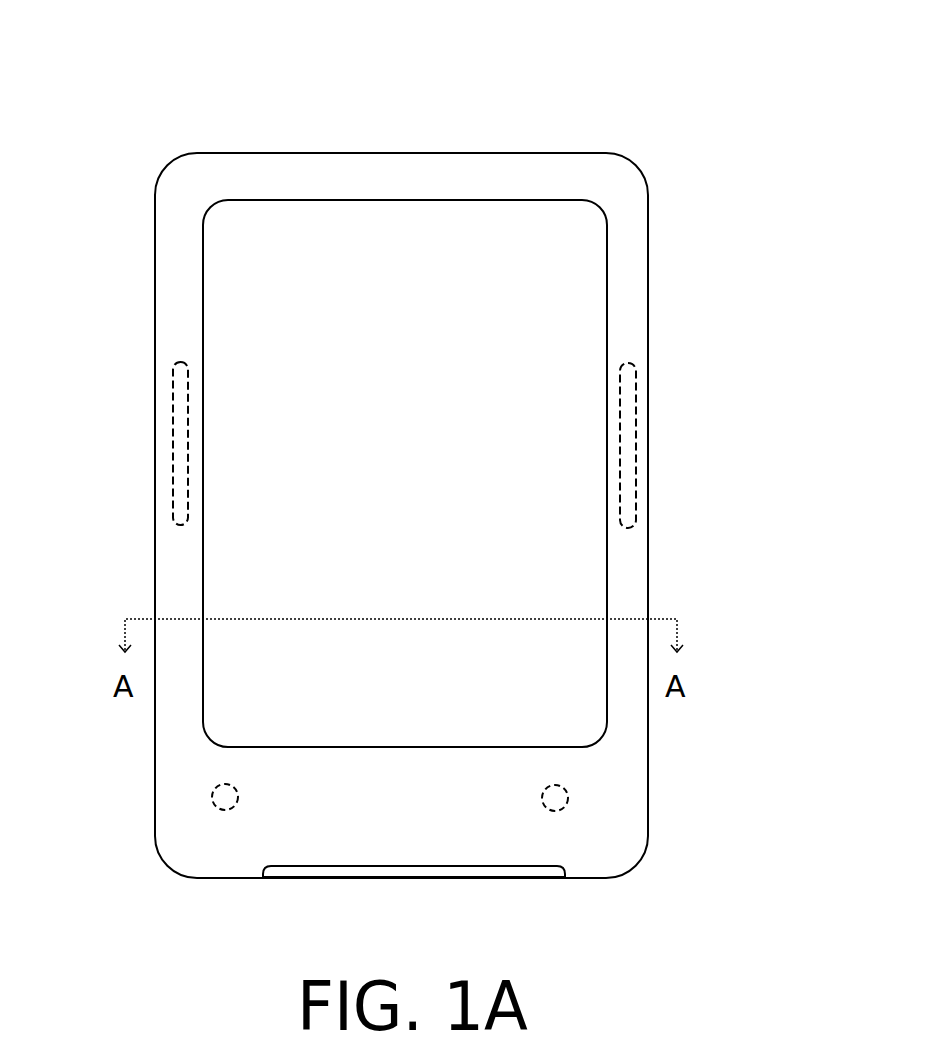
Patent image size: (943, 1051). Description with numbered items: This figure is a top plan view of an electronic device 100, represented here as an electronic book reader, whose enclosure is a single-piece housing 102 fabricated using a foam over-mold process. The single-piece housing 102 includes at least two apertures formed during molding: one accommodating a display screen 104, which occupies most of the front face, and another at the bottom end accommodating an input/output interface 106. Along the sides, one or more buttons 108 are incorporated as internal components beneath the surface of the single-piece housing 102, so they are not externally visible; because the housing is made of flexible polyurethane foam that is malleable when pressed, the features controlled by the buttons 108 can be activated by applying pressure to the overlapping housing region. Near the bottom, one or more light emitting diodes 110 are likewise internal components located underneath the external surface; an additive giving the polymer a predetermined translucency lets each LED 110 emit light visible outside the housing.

The electronic device 100 is at (710, 88).
The single-piece housing 102 is at (365, 153).
The display screen 104 is at (203, 217).
The input/output (I/O) interface 106 is at (412, 878).
The button 108 is at (635, 445).
The light emitting diode (LED) 110 is at (568, 790).